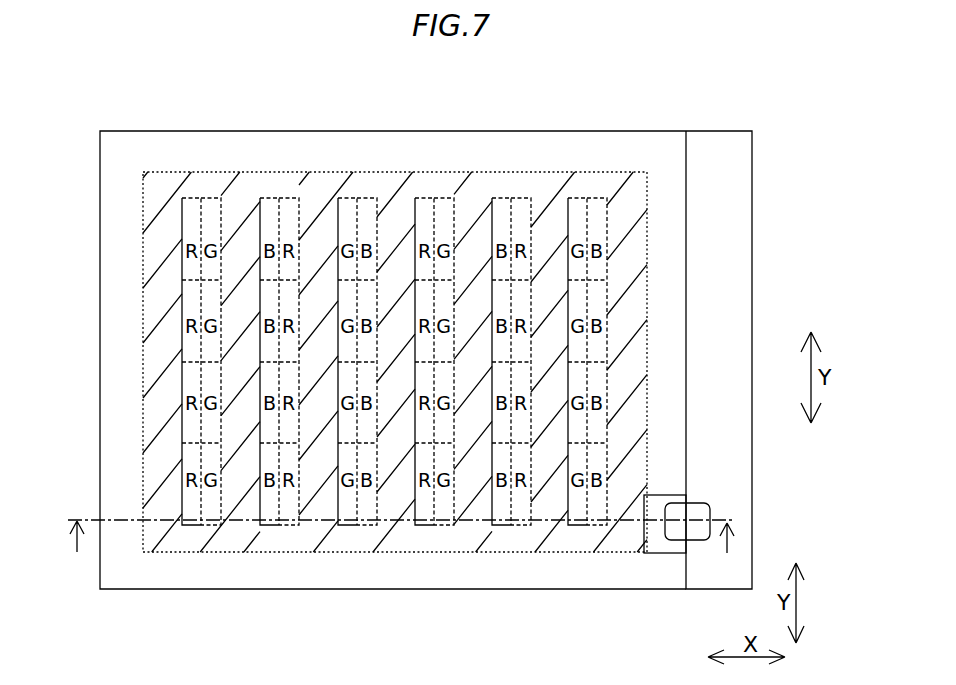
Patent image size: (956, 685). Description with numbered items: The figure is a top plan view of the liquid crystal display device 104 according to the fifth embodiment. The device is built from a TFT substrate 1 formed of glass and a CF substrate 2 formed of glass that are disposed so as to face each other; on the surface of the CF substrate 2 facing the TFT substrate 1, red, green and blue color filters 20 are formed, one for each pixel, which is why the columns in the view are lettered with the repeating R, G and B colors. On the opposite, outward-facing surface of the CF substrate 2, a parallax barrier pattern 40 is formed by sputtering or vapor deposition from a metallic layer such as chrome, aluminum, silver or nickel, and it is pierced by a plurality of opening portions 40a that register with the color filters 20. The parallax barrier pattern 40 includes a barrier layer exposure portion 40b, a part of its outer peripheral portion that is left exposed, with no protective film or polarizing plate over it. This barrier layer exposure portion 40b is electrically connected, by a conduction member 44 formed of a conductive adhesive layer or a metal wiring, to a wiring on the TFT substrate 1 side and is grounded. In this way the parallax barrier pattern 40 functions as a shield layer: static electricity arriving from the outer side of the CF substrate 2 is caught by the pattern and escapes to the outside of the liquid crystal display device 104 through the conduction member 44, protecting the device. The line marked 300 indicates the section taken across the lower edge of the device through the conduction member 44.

The liquid crystal display device 104 is at (480, 311).
The TFT substrate 1 is at (722, 131).
The CF substrate 2 is at (600, 131).
The color filter 20 is at (443, 204).
The parallax barrier pattern 40 is at (641, 172).
The opening portion 40a is at (434, 215).
The barrier layer exposure portion 40b is at (661, 506).
The conduction member 44 is at (710, 519).
The cross-section line 300 is at (405, 551).